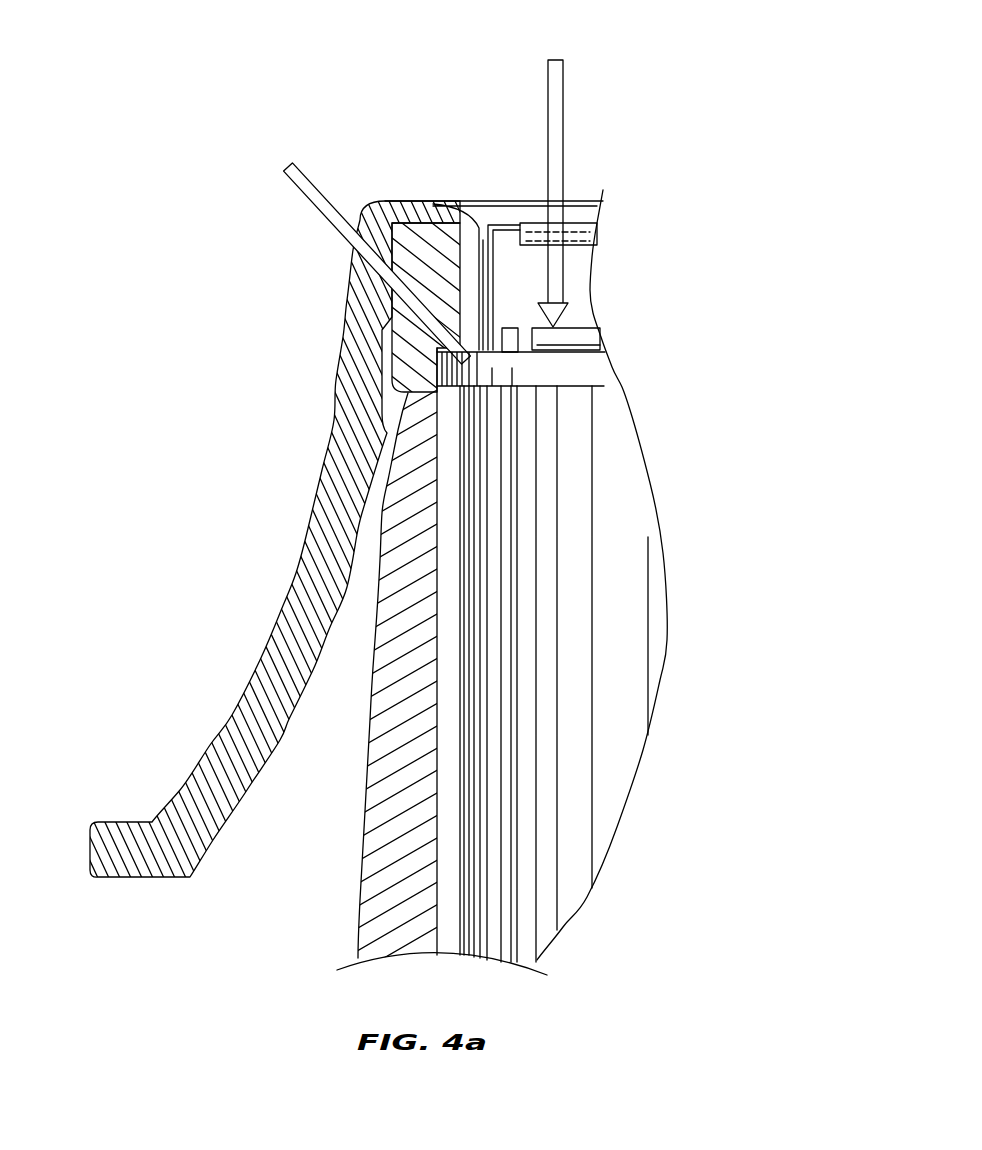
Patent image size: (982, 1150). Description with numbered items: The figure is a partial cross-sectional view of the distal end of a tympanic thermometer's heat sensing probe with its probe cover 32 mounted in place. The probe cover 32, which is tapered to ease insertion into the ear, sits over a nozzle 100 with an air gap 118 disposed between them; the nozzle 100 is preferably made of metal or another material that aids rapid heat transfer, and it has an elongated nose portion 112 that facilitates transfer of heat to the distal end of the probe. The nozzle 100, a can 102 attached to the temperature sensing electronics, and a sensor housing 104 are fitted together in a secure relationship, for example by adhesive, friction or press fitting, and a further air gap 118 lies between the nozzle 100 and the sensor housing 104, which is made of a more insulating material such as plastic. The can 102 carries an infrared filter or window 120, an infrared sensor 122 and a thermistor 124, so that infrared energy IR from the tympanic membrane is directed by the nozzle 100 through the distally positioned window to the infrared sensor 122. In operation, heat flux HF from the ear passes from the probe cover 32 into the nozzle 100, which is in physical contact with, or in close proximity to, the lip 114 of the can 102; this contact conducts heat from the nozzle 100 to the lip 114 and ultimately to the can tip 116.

The probe cover 32 is at (462, 200).
The nozzle 100 is at (388, 818).
The can 102 is at (427, 277).
The sensor housing 104 is at (495, 557).
The elongated nose portion 112 is at (330, 197).
The lip 114 is at (593, 373).
The can tip 116 is at (507, 222).
The air gap 118 is at (363, 582).
The infrared filter or window 120 is at (580, 232).
The infrared sensor 122 is at (573, 328).
The thermistor 124 is at (560, 273).
The infrared energy IR is at (562, 100).
The heat flux HF is at (303, 192).